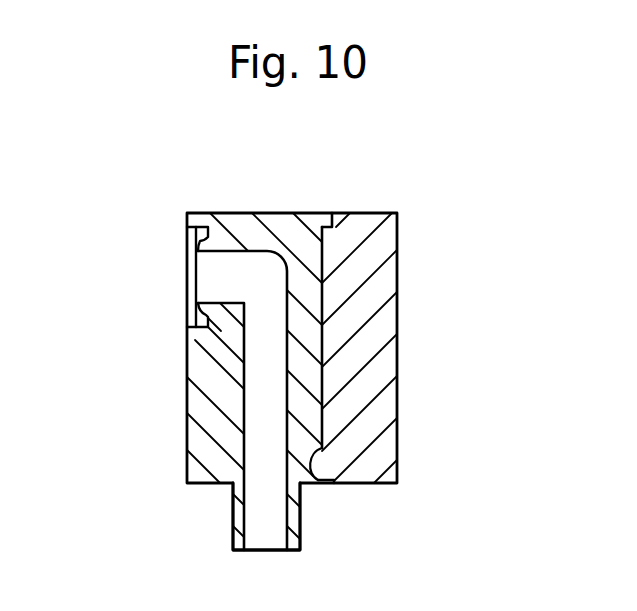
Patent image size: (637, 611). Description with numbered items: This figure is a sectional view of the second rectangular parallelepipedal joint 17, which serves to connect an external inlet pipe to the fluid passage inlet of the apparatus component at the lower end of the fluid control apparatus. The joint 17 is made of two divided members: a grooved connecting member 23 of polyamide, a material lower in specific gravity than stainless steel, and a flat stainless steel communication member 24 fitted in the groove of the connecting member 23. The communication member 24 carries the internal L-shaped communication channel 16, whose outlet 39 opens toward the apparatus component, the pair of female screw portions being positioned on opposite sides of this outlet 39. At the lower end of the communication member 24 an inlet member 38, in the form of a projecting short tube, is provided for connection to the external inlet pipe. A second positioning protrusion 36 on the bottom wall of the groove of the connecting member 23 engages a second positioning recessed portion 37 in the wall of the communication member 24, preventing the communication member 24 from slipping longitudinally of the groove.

The second rectangular parallelepipedal joint 17 is at (420, 223).
The L-shaped communication channel 16 is at (258, 408).
The outlet 39 is at (208, 276).
The communication member 24 is at (307, 370).
The connecting member 23 is at (352, 292).
The second positioning protrusion 36 is at (327, 467).
The second positioning recessed portion 37 is at (318, 476).
The inlet member 38 is at (236, 518).